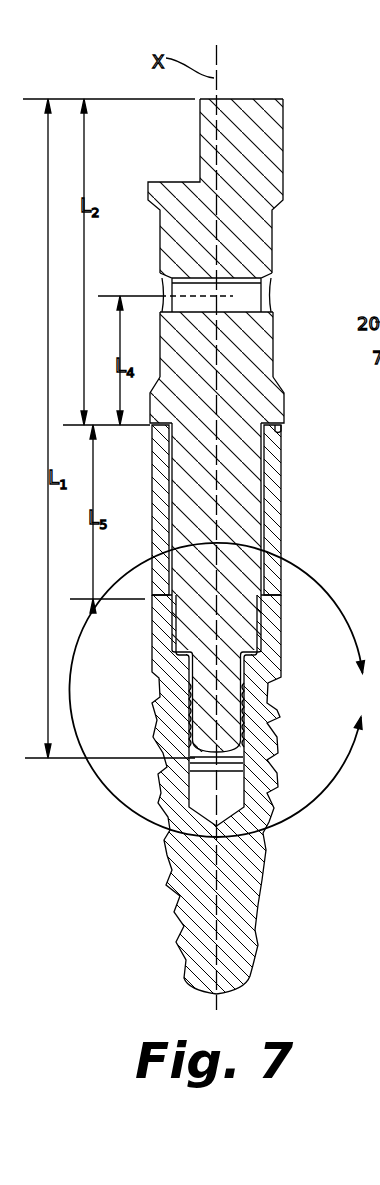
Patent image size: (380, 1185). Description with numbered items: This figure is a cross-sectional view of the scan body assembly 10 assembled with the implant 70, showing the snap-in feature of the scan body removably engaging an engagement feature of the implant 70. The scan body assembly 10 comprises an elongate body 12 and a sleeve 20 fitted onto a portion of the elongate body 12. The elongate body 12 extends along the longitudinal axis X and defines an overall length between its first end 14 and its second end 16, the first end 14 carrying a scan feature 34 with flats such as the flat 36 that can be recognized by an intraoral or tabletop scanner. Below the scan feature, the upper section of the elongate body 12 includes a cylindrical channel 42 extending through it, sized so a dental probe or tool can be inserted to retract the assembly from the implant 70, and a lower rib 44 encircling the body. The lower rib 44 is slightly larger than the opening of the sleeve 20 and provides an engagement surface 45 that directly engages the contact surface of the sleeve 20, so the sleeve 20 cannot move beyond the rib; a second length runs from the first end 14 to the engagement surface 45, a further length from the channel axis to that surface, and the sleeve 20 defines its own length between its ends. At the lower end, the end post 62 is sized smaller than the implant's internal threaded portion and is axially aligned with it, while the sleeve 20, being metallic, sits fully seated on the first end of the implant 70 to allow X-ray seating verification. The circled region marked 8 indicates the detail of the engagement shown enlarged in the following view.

The scan body assembly 10 is at (260, 379).
The elongate body 12 is at (290, 355).
The first end 14 is at (293, 75).
The second end 16 is at (205, 770).
The sleeve 20 is at (246, 510).
The scan feature 34 is at (260, 140).
The flat 36 is at (241, 98).
The cylindrical channel 42 is at (233, 297).
The lower rib 44 is at (286, 405).
The engagement surface 45 is at (280, 432).
The end post 62 is at (227, 710).
The implant 70 is at (234, 794).
The detail view indicator 8 is at (220, 690).